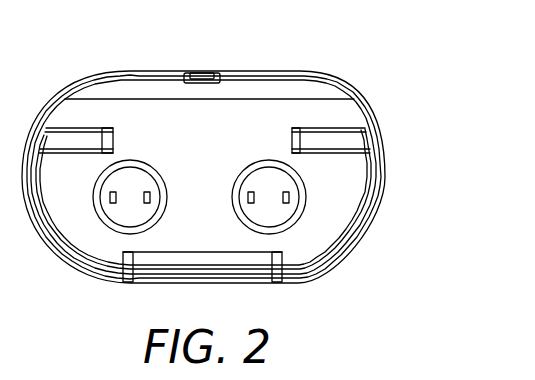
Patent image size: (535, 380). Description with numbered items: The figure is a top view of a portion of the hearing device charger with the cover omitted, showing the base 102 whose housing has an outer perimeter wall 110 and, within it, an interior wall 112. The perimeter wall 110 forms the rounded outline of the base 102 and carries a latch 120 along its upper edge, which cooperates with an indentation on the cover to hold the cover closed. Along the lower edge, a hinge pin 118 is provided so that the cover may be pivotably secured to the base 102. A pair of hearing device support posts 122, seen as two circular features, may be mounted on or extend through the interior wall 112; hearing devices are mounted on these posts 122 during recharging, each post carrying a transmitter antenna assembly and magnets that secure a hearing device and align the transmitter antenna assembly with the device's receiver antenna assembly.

The base 102 is at (161, 42).
The perimeter wall 110 is at (90, 80).
The interior wall 112 is at (218, 173).
The hinge pin 118 is at (148, 268).
The latch 120 is at (197, 72).
The hearing device support post 122 is at (300, 218).